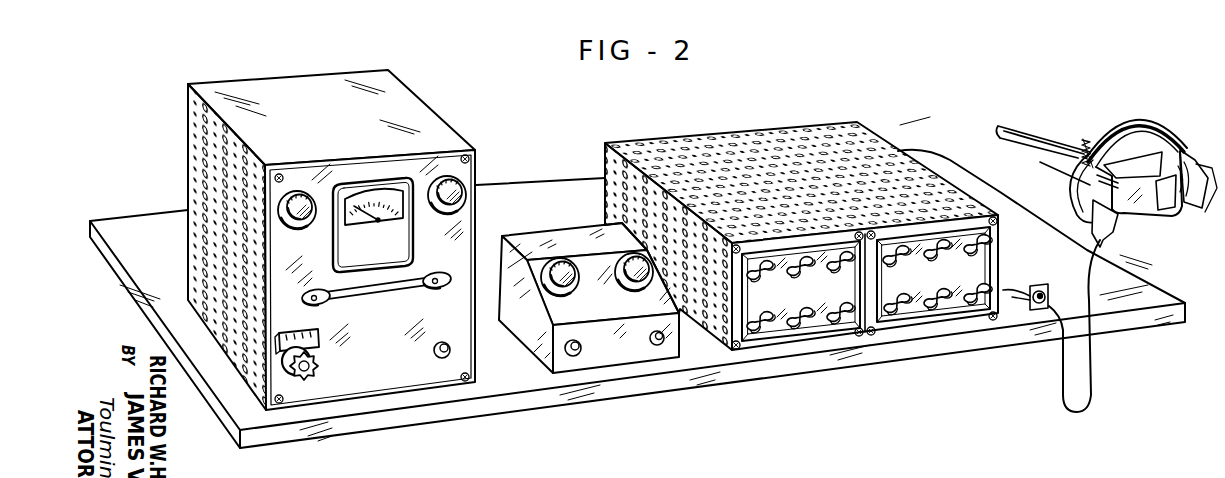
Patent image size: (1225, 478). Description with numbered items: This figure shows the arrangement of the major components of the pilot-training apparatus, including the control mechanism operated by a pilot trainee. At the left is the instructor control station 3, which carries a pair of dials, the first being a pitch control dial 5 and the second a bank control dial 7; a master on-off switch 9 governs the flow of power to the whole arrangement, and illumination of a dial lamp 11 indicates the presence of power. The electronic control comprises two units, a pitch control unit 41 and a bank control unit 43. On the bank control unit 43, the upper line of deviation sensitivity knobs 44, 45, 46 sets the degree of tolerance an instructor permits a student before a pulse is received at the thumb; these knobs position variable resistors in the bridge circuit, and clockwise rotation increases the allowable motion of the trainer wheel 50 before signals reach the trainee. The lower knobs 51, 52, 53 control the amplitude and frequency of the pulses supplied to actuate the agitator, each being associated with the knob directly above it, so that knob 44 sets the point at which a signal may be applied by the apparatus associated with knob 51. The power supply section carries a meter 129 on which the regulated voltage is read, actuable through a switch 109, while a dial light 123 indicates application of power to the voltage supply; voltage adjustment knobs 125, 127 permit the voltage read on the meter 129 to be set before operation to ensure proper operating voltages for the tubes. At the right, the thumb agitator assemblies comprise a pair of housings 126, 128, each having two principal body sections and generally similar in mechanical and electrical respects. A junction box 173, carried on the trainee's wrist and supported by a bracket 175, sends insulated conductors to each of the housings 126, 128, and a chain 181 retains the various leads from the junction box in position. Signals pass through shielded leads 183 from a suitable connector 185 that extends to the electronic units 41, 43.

The instructor control station 3 is at (521, 329).
The pitch control dial 5 is at (573, 283).
The bank control dial 7 is at (633, 290).
The master on-off switch 9 is at (579, 358).
The dial lamp 11 is at (653, 350).
The pitch control unit 41 is at (780, 332).
The bank control unit 43 is at (953, 312).
The deviation sensitivity knob 44 is at (899, 254).
The deviation sensitivity knob 45 is at (943, 252).
The deviation sensitivity knob 46 is at (985, 249).
The trainer wheel 50 is at (1130, 120).
The pulse amplitude and frequency knob 51 is at (893, 315).
The pulse amplitude and frequency knob 52 is at (931, 313).
The pulse amplitude and frequency knob 53 is at (974, 303).
The switch 109 is at (320, 364).
The dial light 123 is at (441, 359).
The voltage adjustment knob 125 is at (300, 196).
The thumb agitator housing 126 is at (1094, 154).
The voltage adjustment knob 127 is at (461, 201).
The thumb agitator housing 128 is at (1083, 146).
The meter 129 is at (381, 192).
The junction box 173 is at (1085, 207).
The bracket 175 is at (1113, 207).
The chain 181 is at (1080, 178).
The shielded leads 183 is at (1093, 355).
The connector 185 is at (1044, 290).